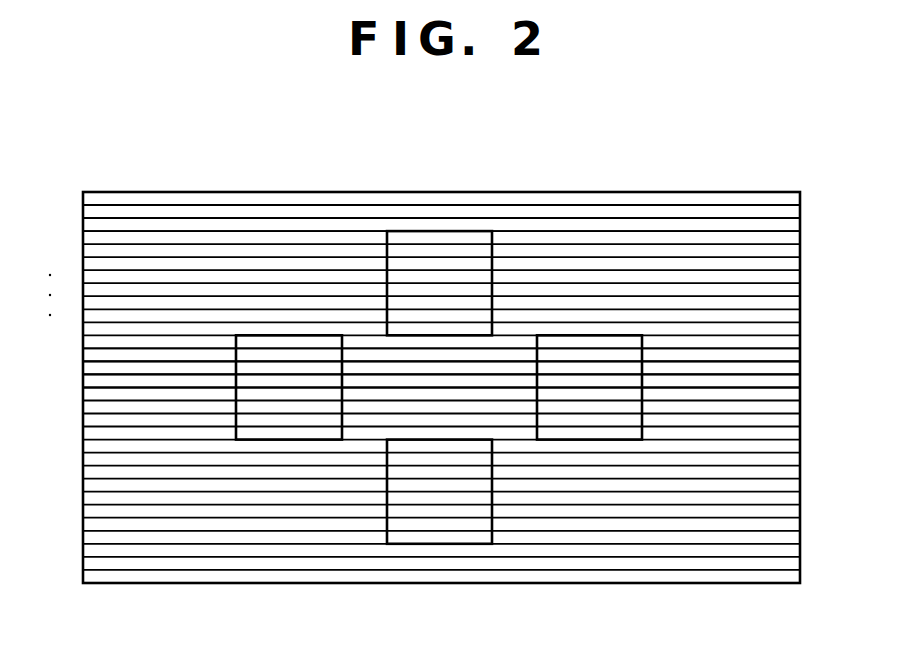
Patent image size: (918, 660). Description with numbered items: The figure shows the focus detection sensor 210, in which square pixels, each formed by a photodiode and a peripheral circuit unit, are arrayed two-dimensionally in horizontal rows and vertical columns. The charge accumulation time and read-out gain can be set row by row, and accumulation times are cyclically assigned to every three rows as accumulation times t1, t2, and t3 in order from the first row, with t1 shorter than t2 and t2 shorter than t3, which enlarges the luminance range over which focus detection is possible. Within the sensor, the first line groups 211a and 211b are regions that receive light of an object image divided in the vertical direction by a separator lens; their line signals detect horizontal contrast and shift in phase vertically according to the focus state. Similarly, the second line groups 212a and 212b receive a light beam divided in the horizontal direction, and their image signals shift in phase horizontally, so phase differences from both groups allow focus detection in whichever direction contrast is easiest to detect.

The focus detection sensor 210 is at (742, 191).
The first line group 211a is at (492, 240).
The first line group 211b is at (492, 536).
The second line group 212a is at (236, 338).
The second line group 212b is at (644, 440).
The accumulation time t1 is at (83, 202).
The accumulation time t2 is at (83, 212).
The accumulation time t3 is at (83, 223).